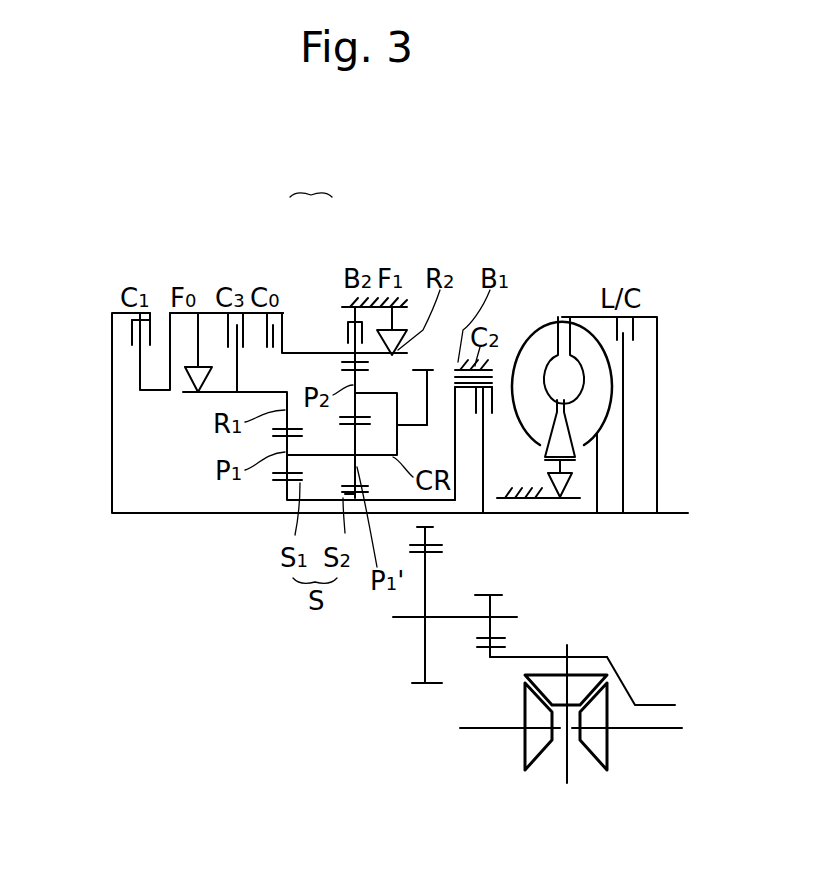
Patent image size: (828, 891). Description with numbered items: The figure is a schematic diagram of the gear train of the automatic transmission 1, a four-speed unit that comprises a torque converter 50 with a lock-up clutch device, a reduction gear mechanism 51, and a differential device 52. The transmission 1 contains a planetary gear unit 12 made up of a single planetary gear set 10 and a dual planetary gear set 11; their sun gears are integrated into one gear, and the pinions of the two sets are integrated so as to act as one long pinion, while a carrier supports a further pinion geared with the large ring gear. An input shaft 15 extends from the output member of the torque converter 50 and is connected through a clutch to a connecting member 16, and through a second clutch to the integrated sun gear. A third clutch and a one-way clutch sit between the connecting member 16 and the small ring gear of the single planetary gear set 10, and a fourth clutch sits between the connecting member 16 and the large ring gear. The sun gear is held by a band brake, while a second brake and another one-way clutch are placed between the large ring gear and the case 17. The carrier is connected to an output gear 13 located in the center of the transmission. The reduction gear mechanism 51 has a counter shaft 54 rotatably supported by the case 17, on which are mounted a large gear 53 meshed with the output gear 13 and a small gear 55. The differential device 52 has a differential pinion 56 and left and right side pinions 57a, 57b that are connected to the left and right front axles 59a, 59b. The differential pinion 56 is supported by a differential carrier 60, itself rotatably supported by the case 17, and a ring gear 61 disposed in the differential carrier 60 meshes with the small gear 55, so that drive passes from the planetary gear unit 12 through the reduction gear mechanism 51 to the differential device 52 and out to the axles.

The automatic transmission 1 is at (102, 300).
The single planetary gear set 10 is at (286, 388).
The dual planetary gear set 11 is at (337, 351).
The planetary gear unit 12 is at (311, 179).
The output gear 13 is at (428, 368).
The input shaft 15 is at (530, 513).
The connecting member 16 is at (207, 313).
The case 17 is at (403, 304).
The torque converter 50 is at (565, 313).
The reduction gear mechanism 51 is at (462, 616).
The differential device 52 is at (544, 721).
The large gear 53 is at (427, 657).
The counter shaft 54 is at (452, 612).
The small gear 55 is at (497, 605).
The differential pinion 56 is at (582, 683).
The left side pinion 57a is at (534, 765).
The right side pinion 57b is at (597, 765).
The left front axle 59a is at (468, 730).
The right front axle 59b is at (657, 733).
The differential carrier 60 is at (628, 687).
The ring gear 61 is at (492, 655).